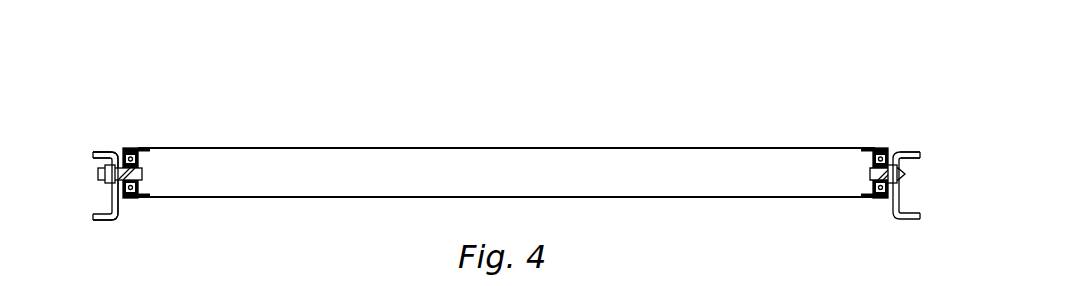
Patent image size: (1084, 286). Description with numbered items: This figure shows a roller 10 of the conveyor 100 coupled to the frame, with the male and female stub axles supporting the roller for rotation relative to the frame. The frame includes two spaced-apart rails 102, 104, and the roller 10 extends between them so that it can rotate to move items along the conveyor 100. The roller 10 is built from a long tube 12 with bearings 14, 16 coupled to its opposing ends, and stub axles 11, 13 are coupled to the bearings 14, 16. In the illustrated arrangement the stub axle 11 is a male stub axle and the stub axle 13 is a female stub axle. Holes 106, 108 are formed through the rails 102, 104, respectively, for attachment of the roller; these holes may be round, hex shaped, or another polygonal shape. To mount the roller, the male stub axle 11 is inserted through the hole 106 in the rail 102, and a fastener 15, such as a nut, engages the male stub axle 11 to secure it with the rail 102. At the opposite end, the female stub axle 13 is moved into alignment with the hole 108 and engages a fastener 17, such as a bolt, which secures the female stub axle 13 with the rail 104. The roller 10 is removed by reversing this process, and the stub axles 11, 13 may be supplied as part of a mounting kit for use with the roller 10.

The roller 10 is at (392, 146).
The tube 12 is at (478, 146).
The bearing 14 is at (143, 160).
The bearing 16 is at (866, 158).
The male stub axle 11 is at (149, 173).
The female stub axle 13 is at (862, 175).
The fastener 15 is at (101, 187).
The fastener 17 is at (909, 173).
The conveyor 100 is at (151, 74).
The rail 102 is at (105, 146).
The rail 104 is at (908, 146).
The hole 106 is at (99, 160).
The hole 108 is at (904, 158).